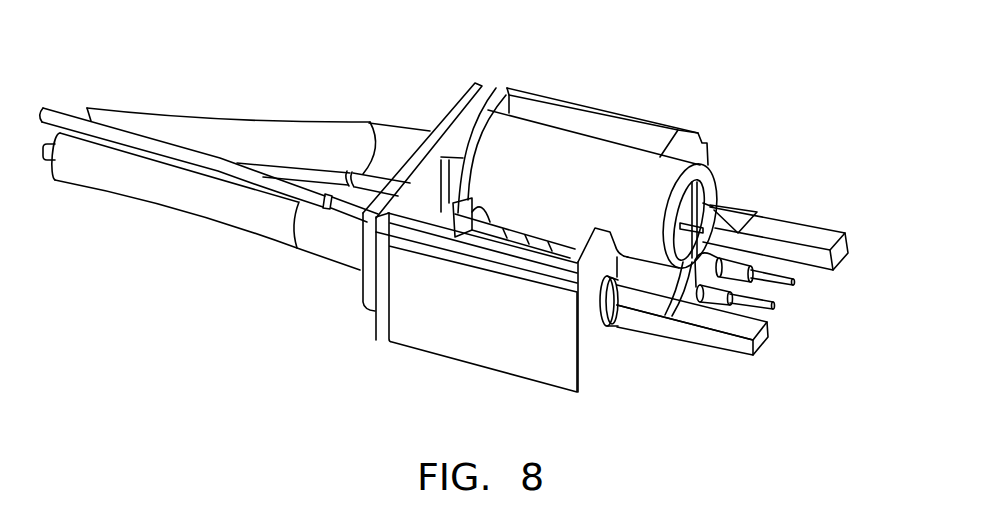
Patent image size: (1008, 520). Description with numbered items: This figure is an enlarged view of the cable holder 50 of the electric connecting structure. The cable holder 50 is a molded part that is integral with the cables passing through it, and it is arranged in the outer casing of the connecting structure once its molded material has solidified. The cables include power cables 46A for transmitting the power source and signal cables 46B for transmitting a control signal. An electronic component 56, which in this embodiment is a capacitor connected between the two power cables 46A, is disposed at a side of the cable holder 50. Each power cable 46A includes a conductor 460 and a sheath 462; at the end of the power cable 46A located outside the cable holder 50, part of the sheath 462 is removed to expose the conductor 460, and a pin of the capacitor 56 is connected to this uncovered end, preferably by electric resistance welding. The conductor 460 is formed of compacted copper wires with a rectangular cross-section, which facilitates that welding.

The power cable 46A is at (240, 210).
The signal cable 46B is at (321, 171).
The cable holder 50 is at (376, 333).
The electronic component 56 is at (536, 132).
The conductor 460 is at (760, 337).
The sheath 462 is at (607, 328).